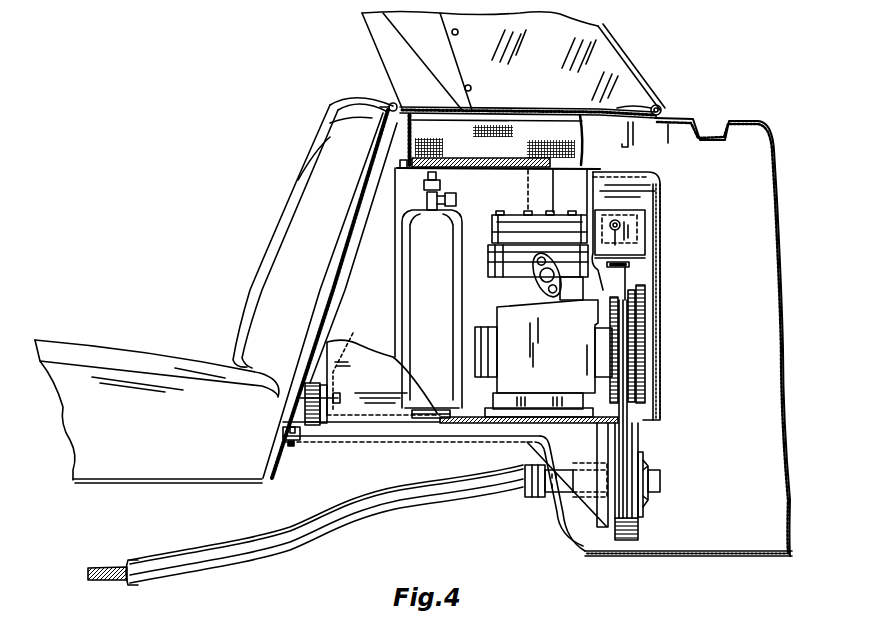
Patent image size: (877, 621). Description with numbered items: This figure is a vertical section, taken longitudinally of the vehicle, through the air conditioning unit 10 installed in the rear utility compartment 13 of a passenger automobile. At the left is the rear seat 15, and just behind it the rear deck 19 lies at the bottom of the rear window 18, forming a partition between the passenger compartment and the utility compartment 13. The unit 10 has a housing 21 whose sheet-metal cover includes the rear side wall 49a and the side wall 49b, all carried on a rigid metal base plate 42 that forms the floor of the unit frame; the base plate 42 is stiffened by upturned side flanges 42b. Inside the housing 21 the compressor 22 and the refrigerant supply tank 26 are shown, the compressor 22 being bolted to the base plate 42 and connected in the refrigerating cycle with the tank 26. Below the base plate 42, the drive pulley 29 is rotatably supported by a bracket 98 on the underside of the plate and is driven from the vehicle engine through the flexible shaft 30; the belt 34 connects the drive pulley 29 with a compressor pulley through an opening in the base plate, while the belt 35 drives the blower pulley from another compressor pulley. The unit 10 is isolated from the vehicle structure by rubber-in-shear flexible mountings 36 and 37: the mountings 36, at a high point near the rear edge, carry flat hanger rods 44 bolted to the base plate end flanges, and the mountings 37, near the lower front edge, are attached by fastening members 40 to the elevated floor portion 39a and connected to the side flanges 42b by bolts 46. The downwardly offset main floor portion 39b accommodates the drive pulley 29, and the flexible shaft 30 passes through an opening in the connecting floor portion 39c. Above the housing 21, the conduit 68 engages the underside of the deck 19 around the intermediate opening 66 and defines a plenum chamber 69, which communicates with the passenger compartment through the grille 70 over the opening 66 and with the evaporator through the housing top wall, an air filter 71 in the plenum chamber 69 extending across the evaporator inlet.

The air conditioning unit 10 is at (653, 287).
The utility compartment 13 is at (757, 256).
The rear seat 15 is at (312, 178).
The rear window 18 is at (638, 39).
The rear deck 19 is at (617, 107).
The housing 21 is at (664, 250).
The compressor 22 is at (517, 298).
The refrigerant supply tank 26 is at (457, 218).
The drive pulley 29 is at (643, 506).
The flexible shaft 30 is at (362, 510).
The belt 34 is at (630, 407).
The belt 35 is at (640, 352).
The flexible mountings 36 is at (642, 230).
The flexible mountings 37 is at (322, 430).
The elevated floor portion 39a is at (360, 443).
The main floor portion 39b is at (667, 558).
The connecting floor portion 39c is at (560, 518).
The fastening members 40 is at (303, 440).
The base plate 42 is at (430, 425).
The side flanges 42b is at (383, 360).
The hanger rods 44 is at (630, 265).
The bolts 46 is at (338, 400).
The rear side wall 49a is at (662, 300).
The side wall 49b is at (345, 266).
The intermediate opening 66 is at (520, 108).
The conduit 68 is at (612, 152).
The plenum chamber 69 is at (542, 135).
The grille 70 is at (498, 107).
The air filter 71 is at (463, 162).
The bracket 98 is at (568, 440).